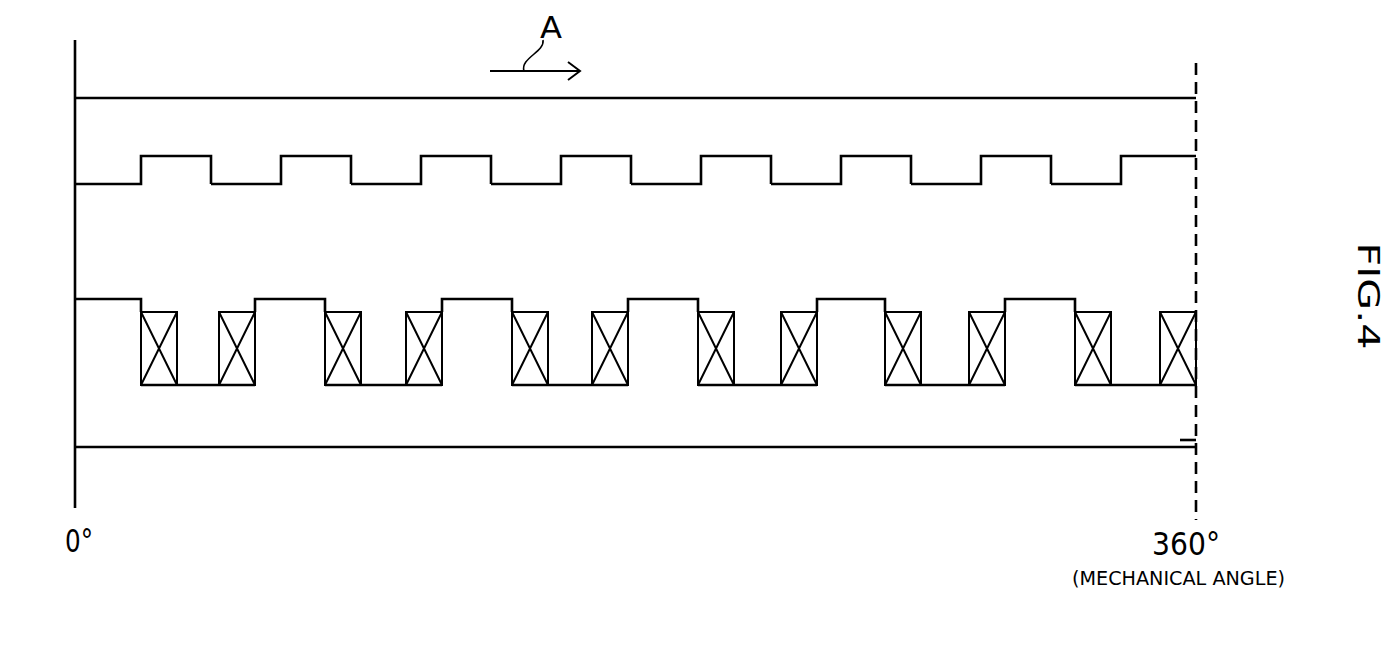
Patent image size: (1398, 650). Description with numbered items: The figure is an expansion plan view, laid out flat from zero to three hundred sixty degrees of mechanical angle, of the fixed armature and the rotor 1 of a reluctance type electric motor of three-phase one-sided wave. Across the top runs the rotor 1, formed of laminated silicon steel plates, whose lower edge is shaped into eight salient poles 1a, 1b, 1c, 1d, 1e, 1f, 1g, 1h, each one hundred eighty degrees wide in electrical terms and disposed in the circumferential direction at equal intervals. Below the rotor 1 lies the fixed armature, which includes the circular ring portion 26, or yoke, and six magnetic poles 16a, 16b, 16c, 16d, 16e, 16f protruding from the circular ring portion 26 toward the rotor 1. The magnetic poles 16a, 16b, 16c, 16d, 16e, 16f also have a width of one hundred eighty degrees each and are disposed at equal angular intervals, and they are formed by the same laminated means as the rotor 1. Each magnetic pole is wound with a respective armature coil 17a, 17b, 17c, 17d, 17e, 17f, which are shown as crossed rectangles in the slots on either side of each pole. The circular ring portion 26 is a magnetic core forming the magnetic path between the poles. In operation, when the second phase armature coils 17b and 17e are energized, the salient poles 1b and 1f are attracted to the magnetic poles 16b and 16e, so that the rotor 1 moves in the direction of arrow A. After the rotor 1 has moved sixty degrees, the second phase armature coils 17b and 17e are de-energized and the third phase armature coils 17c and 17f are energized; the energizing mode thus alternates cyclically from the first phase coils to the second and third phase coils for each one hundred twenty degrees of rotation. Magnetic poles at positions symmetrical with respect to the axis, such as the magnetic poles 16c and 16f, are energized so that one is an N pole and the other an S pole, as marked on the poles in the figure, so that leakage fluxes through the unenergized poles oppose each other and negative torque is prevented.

The rotor 1 is at (1183, 137).
The salient pole 1a is at (93, 185).
The salient pole 1b is at (242, 185).
The salient pole 1c is at (378, 185).
The salient pole 1d is at (515, 185).
The salient pole 1e is at (655, 185).
The salient pole 1f is at (797, 185).
The salient pole 1g is at (937, 185).
The salient pole 1h is at (1077, 185).
The magnetic pole 16a is at (113, 298).
The magnetic pole 16b is at (293, 298).
The magnetic pole 16c is at (477, 298).
The magnetic pole 16d is at (667, 298).
The magnetic pole 16e is at (850, 298).
The magnetic pole 16f is at (1040, 298).
The armature coil 17a is at (163, 375).
The armature coil 17b is at (345, 375).
The armature coil 17c is at (530, 375).
The armature coil 17d is at (717, 375).
The armature coil 17e is at (905, 375).
The armature coil 17f is at (1095, 375).
The circular ring portion 26 is at (1182, 417).